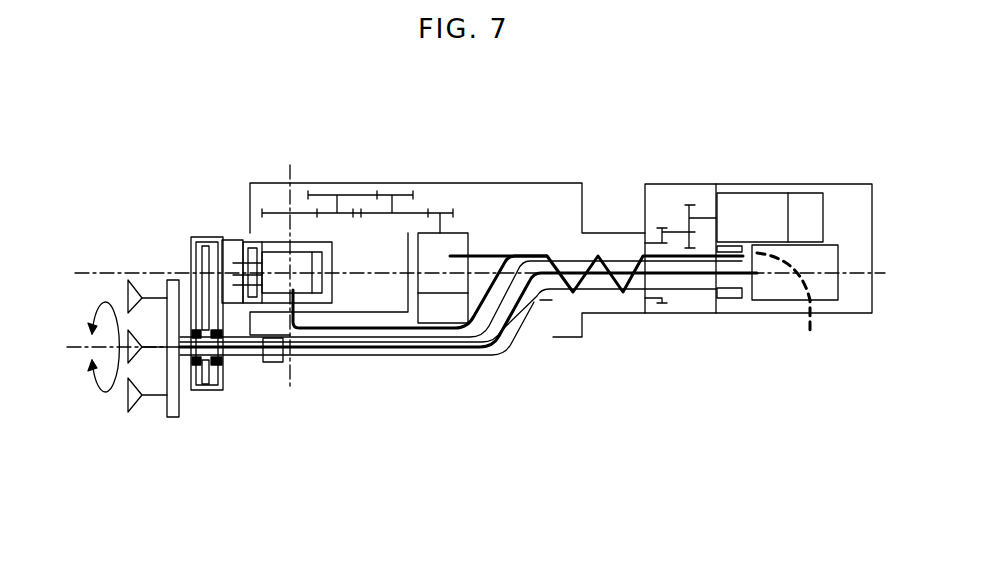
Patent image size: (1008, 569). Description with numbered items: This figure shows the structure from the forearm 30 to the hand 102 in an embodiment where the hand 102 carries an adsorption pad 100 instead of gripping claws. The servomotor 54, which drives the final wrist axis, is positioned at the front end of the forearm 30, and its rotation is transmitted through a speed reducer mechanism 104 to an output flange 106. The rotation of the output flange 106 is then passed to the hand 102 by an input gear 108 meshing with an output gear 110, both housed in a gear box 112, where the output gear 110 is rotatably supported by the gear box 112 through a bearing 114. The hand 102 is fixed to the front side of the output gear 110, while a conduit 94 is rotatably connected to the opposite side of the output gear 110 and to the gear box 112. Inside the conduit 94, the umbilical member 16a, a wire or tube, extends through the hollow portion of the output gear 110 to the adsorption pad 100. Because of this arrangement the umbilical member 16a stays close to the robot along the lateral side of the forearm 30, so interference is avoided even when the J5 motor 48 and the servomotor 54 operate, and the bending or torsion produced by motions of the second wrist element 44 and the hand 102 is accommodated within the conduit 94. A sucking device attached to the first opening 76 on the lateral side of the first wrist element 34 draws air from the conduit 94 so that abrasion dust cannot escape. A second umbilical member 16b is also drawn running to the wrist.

The forearm 30 is at (447, 158).
The first wrist element 34 is at (558, 322).
The second wrist element 44 is at (299, 242).
The J5 motor 48 is at (460, 242).
The servomotor 54 is at (300, 286).
The first opening 76 is at (502, 355).
The conduit 94 is at (410, 360).
The adsorption pad 100 is at (128, 402).
The hand 102 is at (157, 430).
The speed reducer mechanism 104 is at (236, 242).
The output flange 106 is at (213, 257).
The input gear 108 is at (208, 242).
The output gear 110 is at (207, 386).
The gear box 112 is at (190, 248).
The bearing 114 is at (237, 373).
The umbilical member 16a is at (462, 356).
The second cable 16b is at (523, 252).